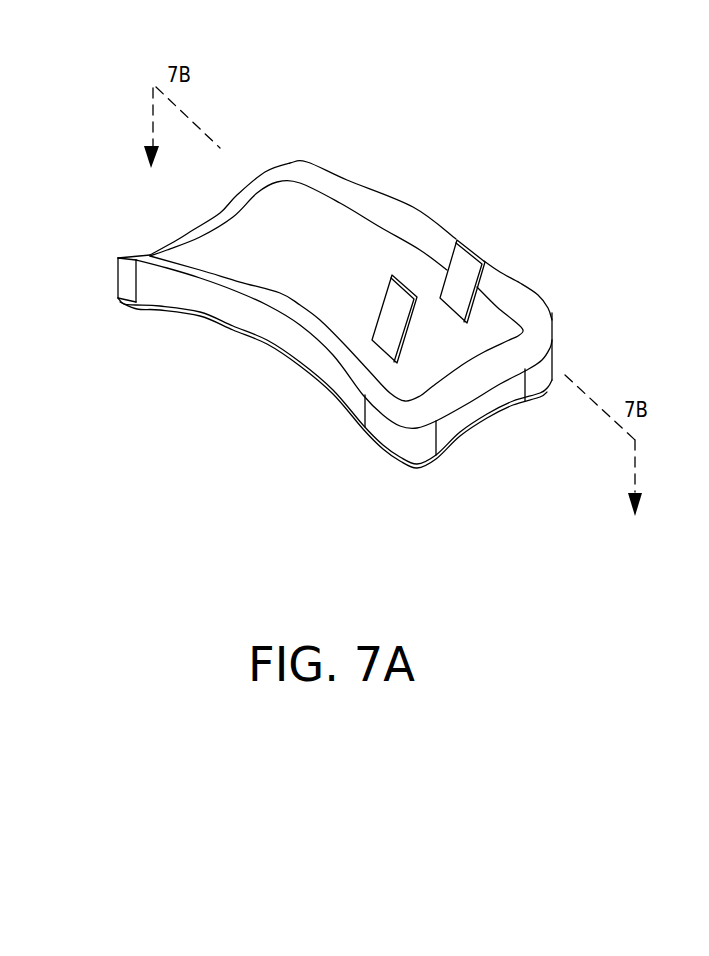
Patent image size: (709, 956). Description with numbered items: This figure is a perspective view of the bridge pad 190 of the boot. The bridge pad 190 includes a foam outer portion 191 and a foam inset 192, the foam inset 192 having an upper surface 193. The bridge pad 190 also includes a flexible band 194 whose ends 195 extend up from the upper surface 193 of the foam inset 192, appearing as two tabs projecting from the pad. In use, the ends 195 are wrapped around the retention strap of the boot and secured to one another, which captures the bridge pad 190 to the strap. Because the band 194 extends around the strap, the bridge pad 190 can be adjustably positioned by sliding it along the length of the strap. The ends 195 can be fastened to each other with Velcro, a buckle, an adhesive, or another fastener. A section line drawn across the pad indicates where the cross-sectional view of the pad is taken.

The bridge pad 190 is at (386, 126).
The foam outer portion 191 is at (533, 333).
The foam inset 192 is at (220, 240).
The upper surface 193 is at (300, 273).
The flexible band 194 is at (460, 288).
The ends 195 is at (385, 318).